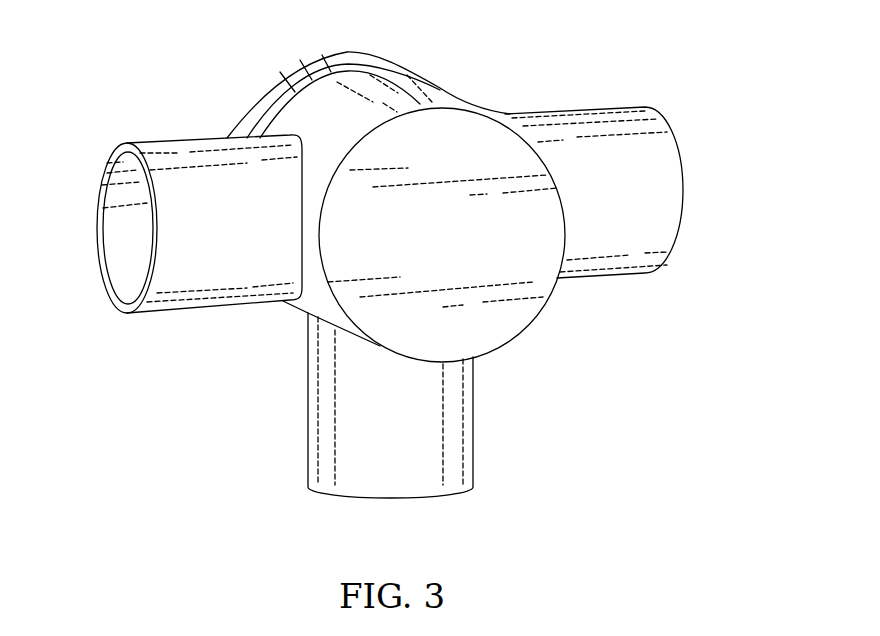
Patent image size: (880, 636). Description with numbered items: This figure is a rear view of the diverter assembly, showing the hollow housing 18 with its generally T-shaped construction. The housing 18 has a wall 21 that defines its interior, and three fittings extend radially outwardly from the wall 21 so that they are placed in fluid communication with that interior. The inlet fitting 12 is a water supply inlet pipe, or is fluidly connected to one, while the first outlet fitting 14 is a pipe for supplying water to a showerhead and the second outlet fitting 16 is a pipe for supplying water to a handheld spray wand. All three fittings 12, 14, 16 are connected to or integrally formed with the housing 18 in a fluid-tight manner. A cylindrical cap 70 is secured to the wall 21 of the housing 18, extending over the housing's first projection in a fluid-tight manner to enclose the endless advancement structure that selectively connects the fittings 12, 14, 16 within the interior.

The inlet fitting 12 is at (197, 308).
The first outlet fitting 14 is at (627, 276).
The second outlet fitting 16 is at (408, 488).
The housing 18 is at (437, 88).
The wall 21 is at (292, 108).
The cap 70 is at (308, 66).